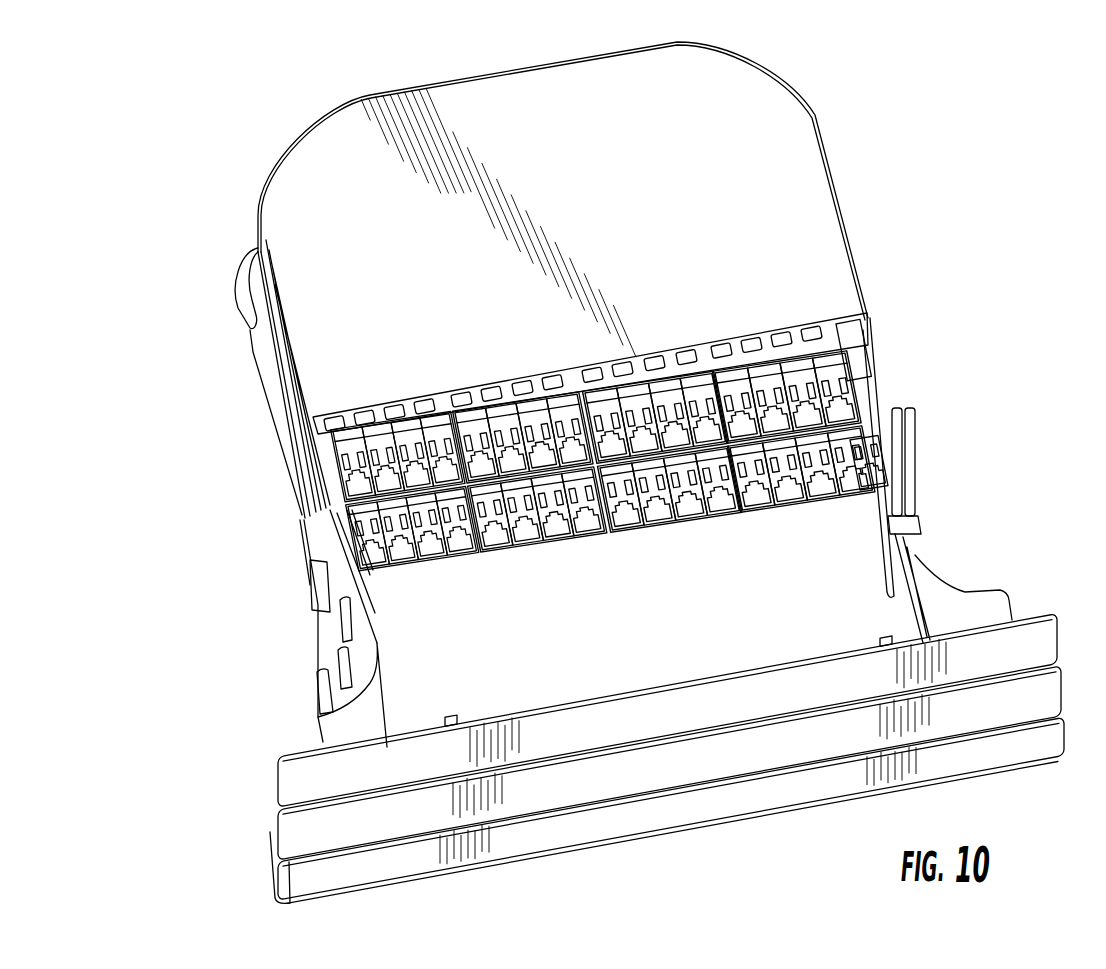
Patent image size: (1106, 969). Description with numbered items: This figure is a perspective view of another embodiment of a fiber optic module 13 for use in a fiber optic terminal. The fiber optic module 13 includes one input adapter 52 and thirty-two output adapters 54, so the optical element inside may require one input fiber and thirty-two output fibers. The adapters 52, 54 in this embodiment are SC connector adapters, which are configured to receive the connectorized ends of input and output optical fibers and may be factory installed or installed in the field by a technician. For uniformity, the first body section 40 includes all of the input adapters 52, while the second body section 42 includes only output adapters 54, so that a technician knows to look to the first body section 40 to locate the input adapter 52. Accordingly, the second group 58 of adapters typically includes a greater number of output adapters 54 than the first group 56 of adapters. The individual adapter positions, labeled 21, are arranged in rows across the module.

The fiber optic module 13 is at (886, 108).
The jack 21 is at (823, 372).
The first body section 40 is at (290, 495).
The second body section 42 is at (280, 380).
The input adapter 52 is at (862, 447).
The output adapter 54 is at (375, 566).
The first group of adapters 56 is at (865, 410).
The second group of adapters 58 is at (886, 386).